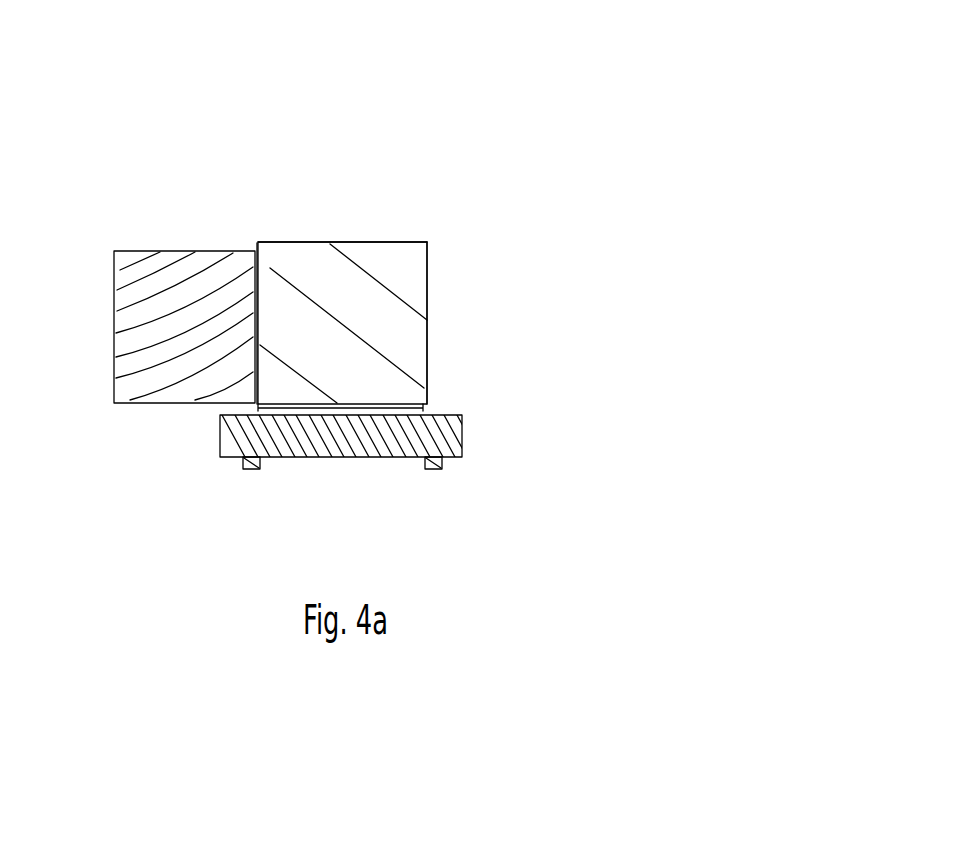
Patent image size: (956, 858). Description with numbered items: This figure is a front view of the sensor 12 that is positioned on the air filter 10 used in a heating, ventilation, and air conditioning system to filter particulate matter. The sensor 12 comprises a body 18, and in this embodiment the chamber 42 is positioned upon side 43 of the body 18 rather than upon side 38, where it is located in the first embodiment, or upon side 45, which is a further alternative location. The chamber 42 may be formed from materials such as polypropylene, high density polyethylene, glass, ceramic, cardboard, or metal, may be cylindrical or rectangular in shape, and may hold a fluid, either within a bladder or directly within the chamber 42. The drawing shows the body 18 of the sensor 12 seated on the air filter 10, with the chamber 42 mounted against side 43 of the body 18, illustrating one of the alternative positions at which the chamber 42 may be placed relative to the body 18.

The air filter 10 is at (462, 420).
The sensor 12 is at (540, 67).
The body 18 is at (313, 250).
The side 38 is at (392, 232).
The chamber 42 is at (84, 267).
The side 43 is at (246, 247).
The side 45 is at (437, 326).